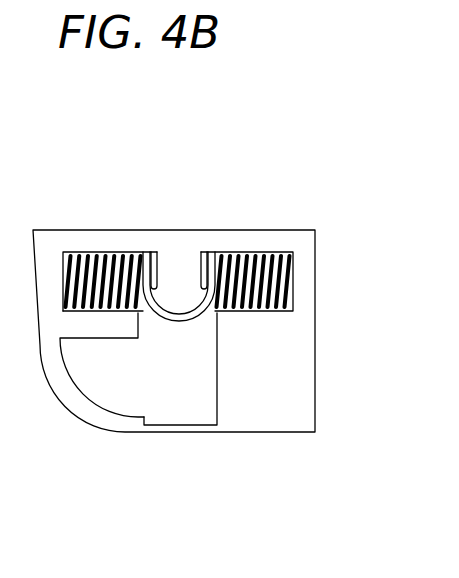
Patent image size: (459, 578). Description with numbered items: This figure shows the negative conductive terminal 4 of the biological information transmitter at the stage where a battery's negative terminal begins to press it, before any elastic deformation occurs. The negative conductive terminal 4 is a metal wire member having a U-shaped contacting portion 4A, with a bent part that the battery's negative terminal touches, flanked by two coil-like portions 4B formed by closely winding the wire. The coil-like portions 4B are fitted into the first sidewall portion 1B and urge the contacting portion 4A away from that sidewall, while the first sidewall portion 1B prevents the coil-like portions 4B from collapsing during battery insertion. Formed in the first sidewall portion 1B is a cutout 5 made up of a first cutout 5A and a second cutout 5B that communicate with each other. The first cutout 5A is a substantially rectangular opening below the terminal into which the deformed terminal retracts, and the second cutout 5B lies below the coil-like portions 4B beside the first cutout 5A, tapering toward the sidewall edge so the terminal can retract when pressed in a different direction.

The first sidewall portion 1B is at (295, 228).
The negative conductive terminal 4 is at (178, 215).
The contacting portion 4A is at (178, 313).
The coil-like portions 4B is at (125, 256).
The cutout 5 is at (138, 426).
The first cutout 5A is at (168, 408).
The second cutout 5B is at (113, 382).